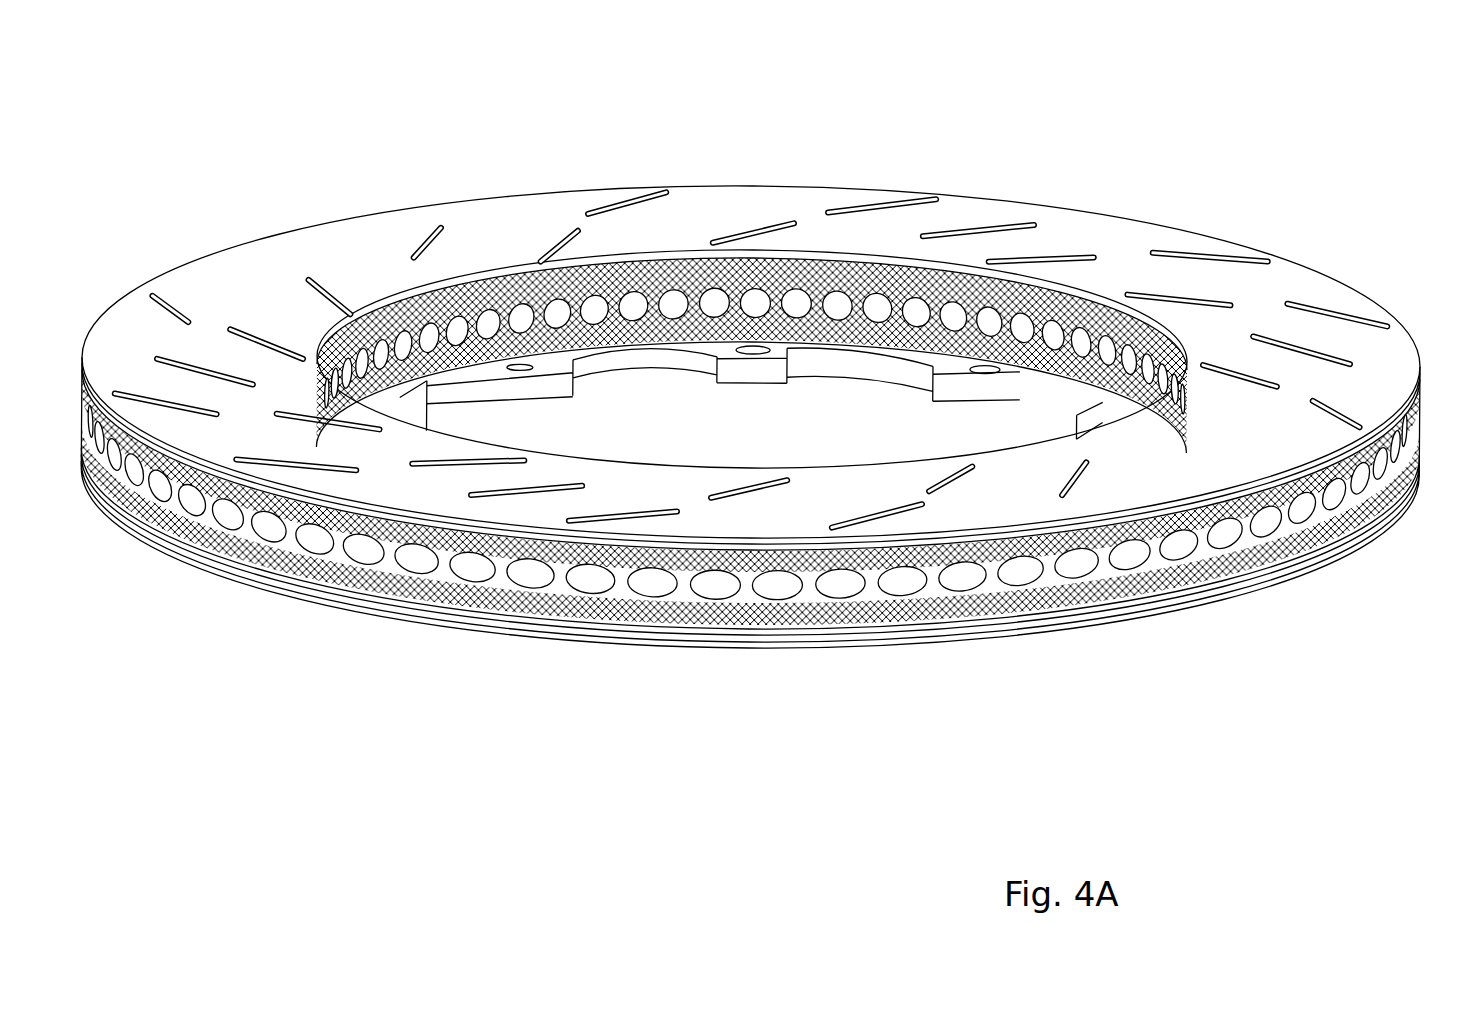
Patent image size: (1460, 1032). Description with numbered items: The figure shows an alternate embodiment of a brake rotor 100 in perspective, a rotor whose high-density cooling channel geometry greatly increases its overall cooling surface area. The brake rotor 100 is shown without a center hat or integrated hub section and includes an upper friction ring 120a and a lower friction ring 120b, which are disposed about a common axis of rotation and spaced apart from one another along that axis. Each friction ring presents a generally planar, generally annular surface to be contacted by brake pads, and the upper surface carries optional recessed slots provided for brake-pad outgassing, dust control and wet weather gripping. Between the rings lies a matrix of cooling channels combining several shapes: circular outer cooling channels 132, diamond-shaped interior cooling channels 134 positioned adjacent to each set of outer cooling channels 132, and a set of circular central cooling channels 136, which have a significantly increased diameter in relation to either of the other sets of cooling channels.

The brake rotor 100 is at (1064, 118).
The upper friction ring 120a is at (1318, 286).
The lower friction ring 120b is at (1418, 458).
The circular outer cooling channels 132 is at (823, 630).
The diamond-shaped interior cooling channels 134 is at (619, 606).
The circular central cooling channels 136 is at (1070, 570).